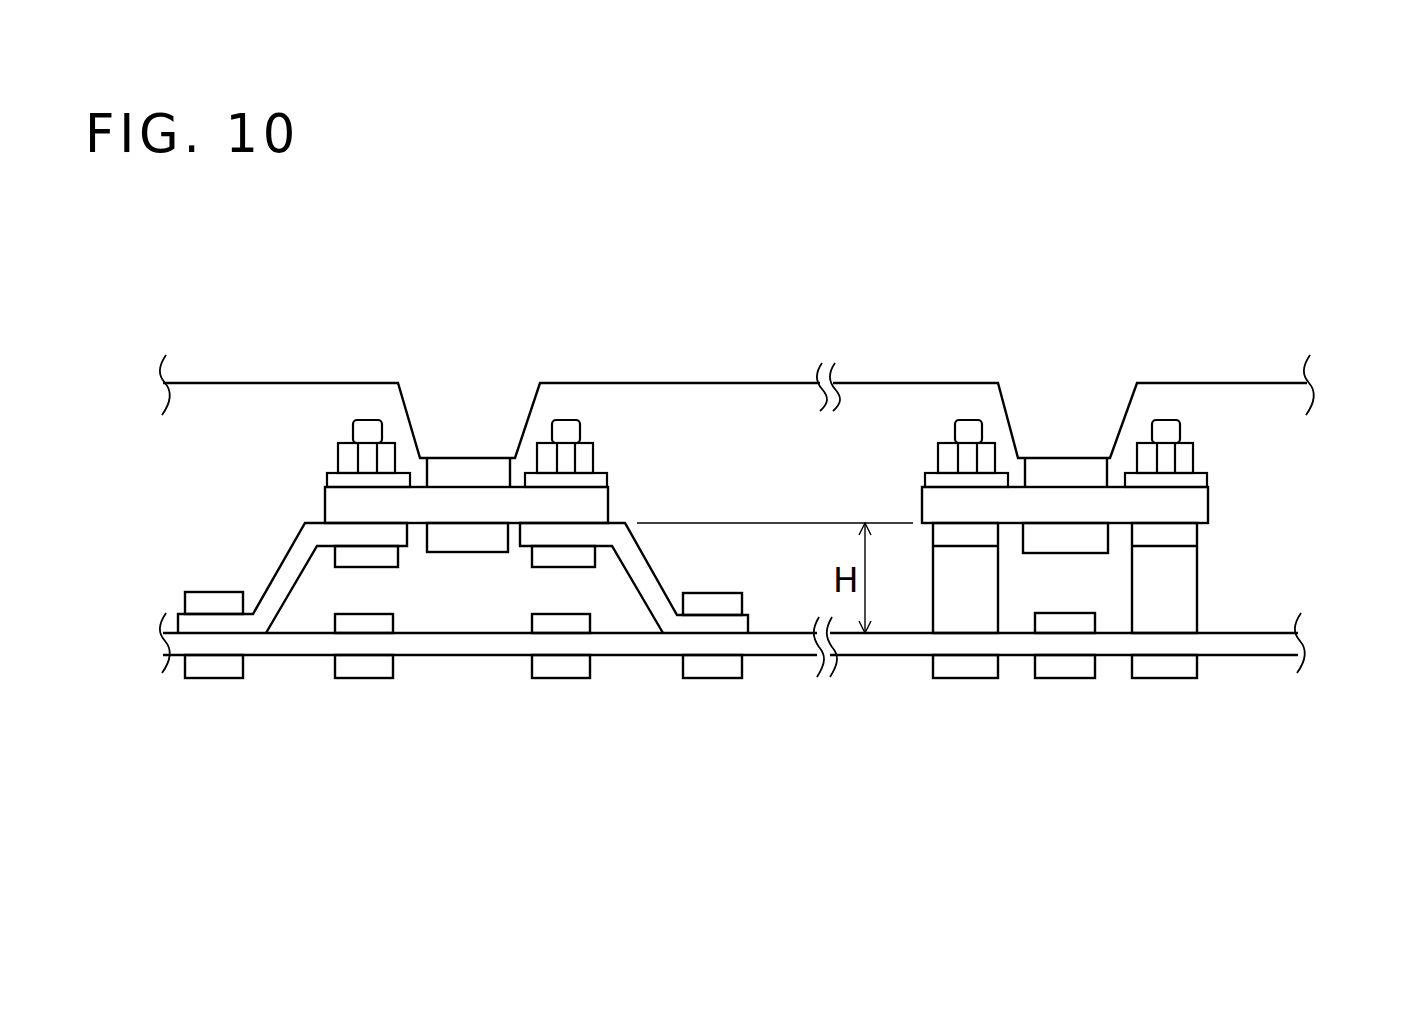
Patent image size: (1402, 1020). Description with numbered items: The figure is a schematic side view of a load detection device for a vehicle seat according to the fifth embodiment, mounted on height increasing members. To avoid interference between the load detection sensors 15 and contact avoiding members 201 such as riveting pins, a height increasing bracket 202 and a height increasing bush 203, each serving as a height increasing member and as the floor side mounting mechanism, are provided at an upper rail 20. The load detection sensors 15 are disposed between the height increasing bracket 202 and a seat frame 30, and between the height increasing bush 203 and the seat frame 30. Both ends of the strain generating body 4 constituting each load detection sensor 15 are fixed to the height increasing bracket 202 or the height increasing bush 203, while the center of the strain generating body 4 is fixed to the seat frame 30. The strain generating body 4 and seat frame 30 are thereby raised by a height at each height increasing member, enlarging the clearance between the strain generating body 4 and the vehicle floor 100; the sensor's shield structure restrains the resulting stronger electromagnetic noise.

The seat frame 30 is at (771, 367).
The load detection sensor 15 is at (302, 472).
The strain generating body 4 is at (347, 507).
The height increasing bracket 202 is at (278, 582).
The height increasing bush 203 is at (972, 590).
The upper rail 20 is at (275, 645).
The contact avoiding member 201 is at (548, 682).
The vehicle floor 100 is at (787, 752).